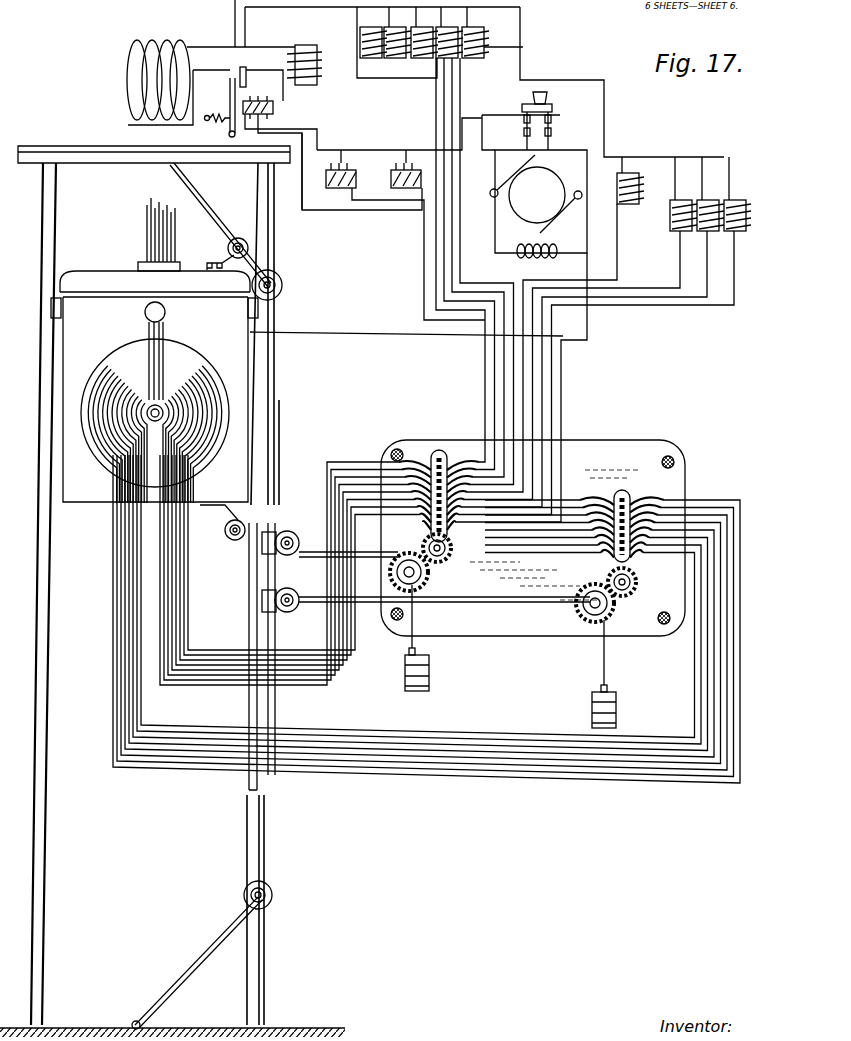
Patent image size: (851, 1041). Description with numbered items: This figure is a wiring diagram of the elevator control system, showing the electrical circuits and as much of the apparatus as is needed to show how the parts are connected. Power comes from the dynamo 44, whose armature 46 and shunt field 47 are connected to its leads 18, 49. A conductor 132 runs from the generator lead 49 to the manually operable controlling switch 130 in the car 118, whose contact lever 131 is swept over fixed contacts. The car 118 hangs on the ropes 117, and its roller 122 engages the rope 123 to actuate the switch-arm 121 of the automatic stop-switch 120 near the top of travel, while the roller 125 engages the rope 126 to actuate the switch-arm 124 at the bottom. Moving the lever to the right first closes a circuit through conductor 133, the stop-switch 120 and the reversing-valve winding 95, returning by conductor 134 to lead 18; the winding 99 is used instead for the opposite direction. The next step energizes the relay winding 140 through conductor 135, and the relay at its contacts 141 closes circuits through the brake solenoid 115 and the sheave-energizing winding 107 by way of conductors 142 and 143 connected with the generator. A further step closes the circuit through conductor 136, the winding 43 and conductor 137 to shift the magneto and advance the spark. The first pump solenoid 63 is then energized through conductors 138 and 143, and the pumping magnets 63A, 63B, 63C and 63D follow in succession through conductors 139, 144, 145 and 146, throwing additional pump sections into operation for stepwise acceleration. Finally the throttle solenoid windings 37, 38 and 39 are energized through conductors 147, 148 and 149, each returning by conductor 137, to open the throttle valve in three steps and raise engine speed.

The winding 107 is at (125, 80).
The conductor 142 is at (233, 12).
The conductor 143 is at (296, 12).
The relay contacts 141 is at (232, 72).
The relay winding 140 is at (266, 95).
The brake solenoid 115 is at (313, 86).
The first pump solenoid 63 is at (360, 35).
The pumping magnet 63A is at (392, 62).
The pumping magnet 63B is at (428, 62).
The pumping magnet 63C is at (448, 62).
The pumping magnet 63D is at (521, 49).
The conductor 137 is at (605, 118).
The winding 43 is at (640, 165).
The conductor 134 is at (500, 110).
The contact 18 is at (524, 142).
The generator lead 49 is at (549, 145).
The dynamo 44 is at (494, 182).
The armature 46 is at (518, 212).
The shunt field 47 is at (560, 232).
The solenoid winding 37 is at (668, 222).
The solenoid winding 38 is at (700, 225).
The solenoid winding 39 is at (742, 225).
The conductor 136 is at (614, 248).
The conductor 147 is at (618, 298).
The conductor 148 is at (676, 300).
The conductor 149 is at (290, 650).
The solenoid winding 95 is at (330, 192).
The winding 99 is at (395, 182).
The conductor 135 is at (312, 215).
The conductor 133 is at (380, 212).
The conductor 138 is at (278, 690).
The conductor 139 is at (315, 688).
The conductor 132 is at (357, 332).
The ropes 117 is at (140, 240).
The roller 122 is at (228, 247).
The controlling switch 130 is at (128, 335).
The contact lever 131 is at (165, 375).
The rope 123 is at (283, 425).
The car 118 is at (95, 515).
The switch-arm 121 is at (438, 452).
The automatic stop-switch 120 is at (642, 455).
The switch-arm 124 is at (650, 490).
The roller 125 is at (225, 540).
The conductor 144 is at (170, 560).
The conductor 145 is at (172, 575).
The conductor 146 is at (176, 592).
The rope 126 is at (272, 840).